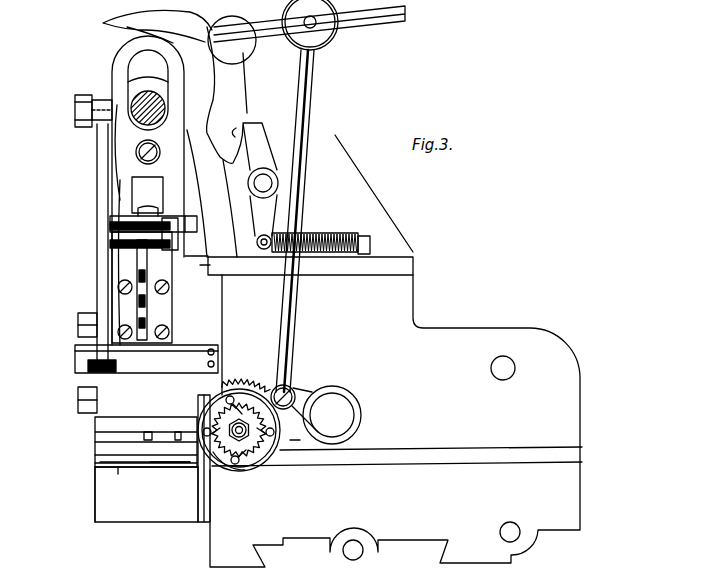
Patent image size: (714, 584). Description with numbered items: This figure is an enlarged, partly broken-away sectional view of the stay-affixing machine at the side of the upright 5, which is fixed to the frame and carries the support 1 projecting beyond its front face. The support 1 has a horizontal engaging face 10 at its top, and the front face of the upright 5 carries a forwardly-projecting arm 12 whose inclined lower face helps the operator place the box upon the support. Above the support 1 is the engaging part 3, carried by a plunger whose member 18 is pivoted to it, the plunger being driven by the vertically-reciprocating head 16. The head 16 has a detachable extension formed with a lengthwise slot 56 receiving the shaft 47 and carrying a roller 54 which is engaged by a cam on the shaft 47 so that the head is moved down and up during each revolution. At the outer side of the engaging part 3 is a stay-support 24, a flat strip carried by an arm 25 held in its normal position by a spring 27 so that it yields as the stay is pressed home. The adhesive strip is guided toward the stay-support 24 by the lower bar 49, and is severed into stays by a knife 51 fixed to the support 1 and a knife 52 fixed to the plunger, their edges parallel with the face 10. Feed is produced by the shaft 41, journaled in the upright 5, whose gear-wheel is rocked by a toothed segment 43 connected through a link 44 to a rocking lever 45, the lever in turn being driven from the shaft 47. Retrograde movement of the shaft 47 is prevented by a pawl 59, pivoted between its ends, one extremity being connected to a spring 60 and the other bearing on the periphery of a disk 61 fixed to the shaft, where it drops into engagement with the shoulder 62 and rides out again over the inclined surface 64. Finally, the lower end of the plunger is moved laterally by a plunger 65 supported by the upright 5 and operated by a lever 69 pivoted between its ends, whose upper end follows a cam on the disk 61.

The support 1 is at (128, 500).
The engaging part 3 is at (125, 448).
The upright 5 is at (388, 308).
The engaging face 10 is at (118, 468).
The forwardly-projecting arm 12 is at (200, 452).
The vertically-reciprocating head 16 is at (173, 257).
The member 18 is at (125, 426).
The stay-support 24 is at (125, 465).
The arm 25 is at (140, 467).
The spring 27 is at (150, 432).
The shaft 41 is at (242, 437).
The toothed segment 43 is at (290, 392).
The link 44 is at (290, 318).
The rocking lever 45 is at (367, 20).
The shaft 47 is at (130, 125).
The lower bar 49 is at (230, 460).
The knife 51 is at (210, 453).
The knife 52 is at (182, 460).
The roller 54 is at (140, 155).
The lengthwise slot 56 is at (90, 97).
The pawl 59 is at (370, 185).
The spring 60 is at (345, 232).
The disk 61 is at (110, 28).
The shoulder 62 is at (247, 110).
The inclined surface 64 is at (255, 152).
The plunger 65 is at (90, 362).
The lever 69 is at (100, 205).